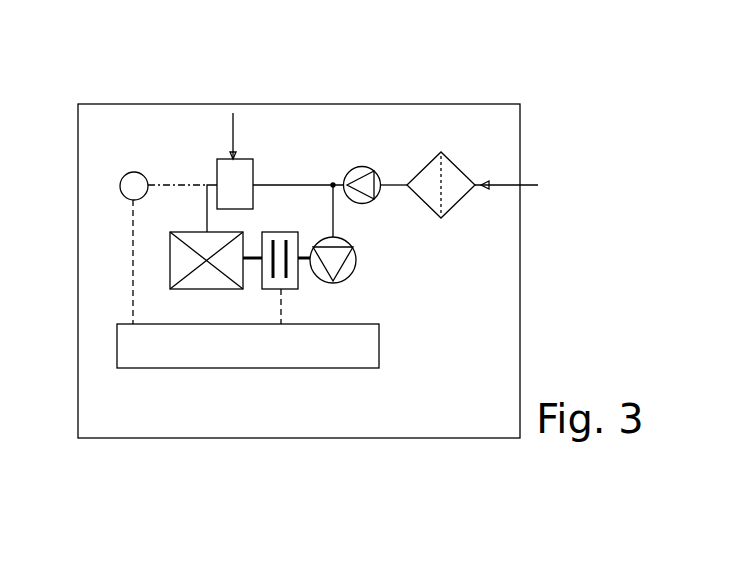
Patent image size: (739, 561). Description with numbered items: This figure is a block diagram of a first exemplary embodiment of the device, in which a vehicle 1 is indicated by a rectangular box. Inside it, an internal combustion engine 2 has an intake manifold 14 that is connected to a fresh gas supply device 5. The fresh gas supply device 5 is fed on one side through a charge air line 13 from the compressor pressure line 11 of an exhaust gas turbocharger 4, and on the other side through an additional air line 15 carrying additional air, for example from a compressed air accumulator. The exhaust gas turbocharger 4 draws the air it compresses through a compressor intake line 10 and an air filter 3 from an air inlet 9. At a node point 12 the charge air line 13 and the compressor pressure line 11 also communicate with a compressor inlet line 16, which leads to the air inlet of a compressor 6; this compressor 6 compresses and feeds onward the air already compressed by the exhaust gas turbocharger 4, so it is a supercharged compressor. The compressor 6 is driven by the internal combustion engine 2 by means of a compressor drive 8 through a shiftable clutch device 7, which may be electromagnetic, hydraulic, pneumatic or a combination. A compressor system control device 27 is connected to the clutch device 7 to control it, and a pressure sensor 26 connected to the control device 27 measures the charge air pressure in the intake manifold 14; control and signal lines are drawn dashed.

The vehicle 1 is at (87, 439).
The internal combustion engine 2 is at (213, 289).
The air filter 3 is at (441, 152).
The exhaust gas turbocharger 4 is at (362, 178).
The fresh gas supply device 5 is at (217, 160).
The compressor 6 is at (357, 267).
The shiftable clutch device 7 is at (269, 289).
The compressor drive 8 is at (300, 262).
The air inlet 9 is at (528, 185).
The compressor intake line 10 is at (396, 185).
The compressor pressure line 11 is at (340, 187).
The node point 12 is at (333, 185).
The charge air line 13 is at (286, 185).
The intake manifold 14 is at (206, 214).
The additional air line 15 is at (236, 125).
The compressor inlet line 16 is at (333, 215).
The pressure sensor 26 is at (132, 172).
The compressor system control device 27 is at (298, 368).